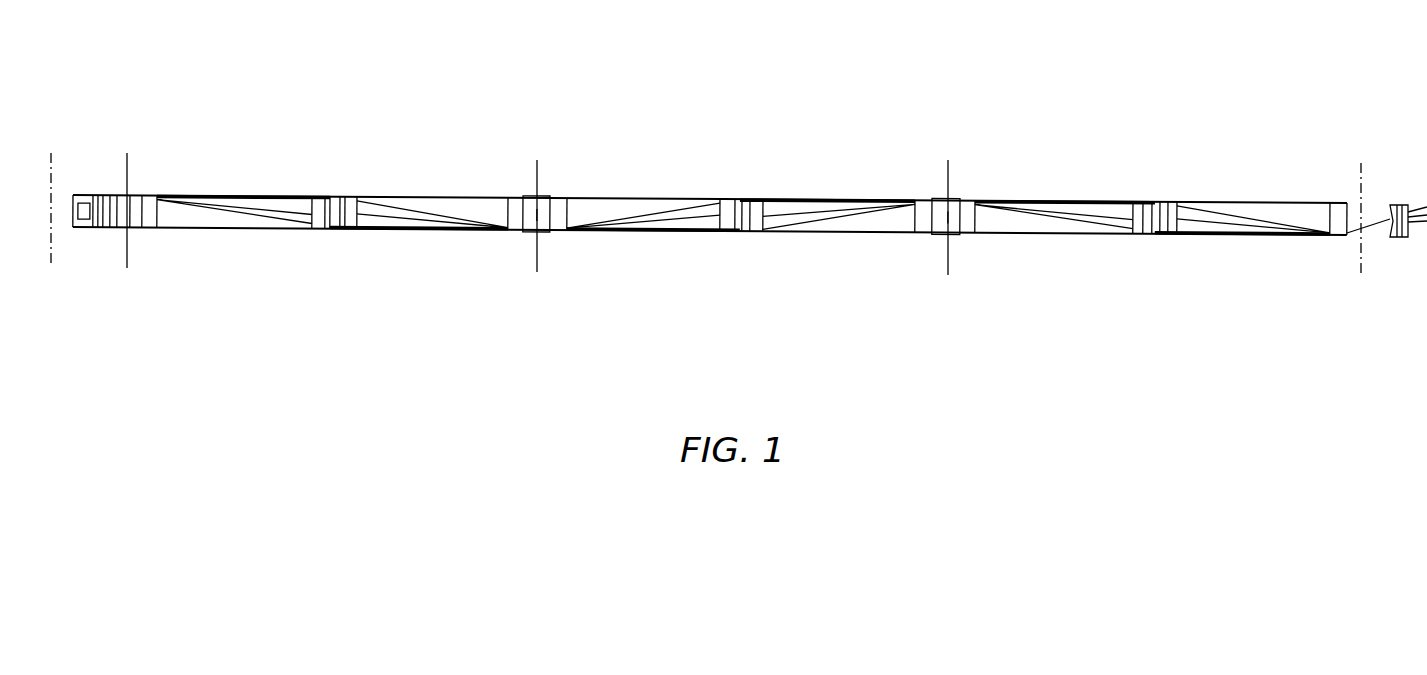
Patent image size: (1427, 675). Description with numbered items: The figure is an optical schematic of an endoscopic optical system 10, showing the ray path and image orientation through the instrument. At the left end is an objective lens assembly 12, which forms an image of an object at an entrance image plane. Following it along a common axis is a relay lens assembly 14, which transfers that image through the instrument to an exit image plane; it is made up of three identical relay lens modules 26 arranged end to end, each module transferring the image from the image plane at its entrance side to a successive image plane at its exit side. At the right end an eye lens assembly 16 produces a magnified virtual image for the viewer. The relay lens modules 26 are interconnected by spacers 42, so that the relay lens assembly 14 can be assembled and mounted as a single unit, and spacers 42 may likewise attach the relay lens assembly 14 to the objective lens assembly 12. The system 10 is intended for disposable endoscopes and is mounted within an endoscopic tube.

The optical system 10 is at (612, 350).
The objective lens assembly 12 is at (98, 267).
The relay lens assembly 14 is at (652, 82).
The eye lens assembly 16 is at (1390, 252).
The relay lens module 26 is at (537, 161).
The spacer 42 is at (126, 197).